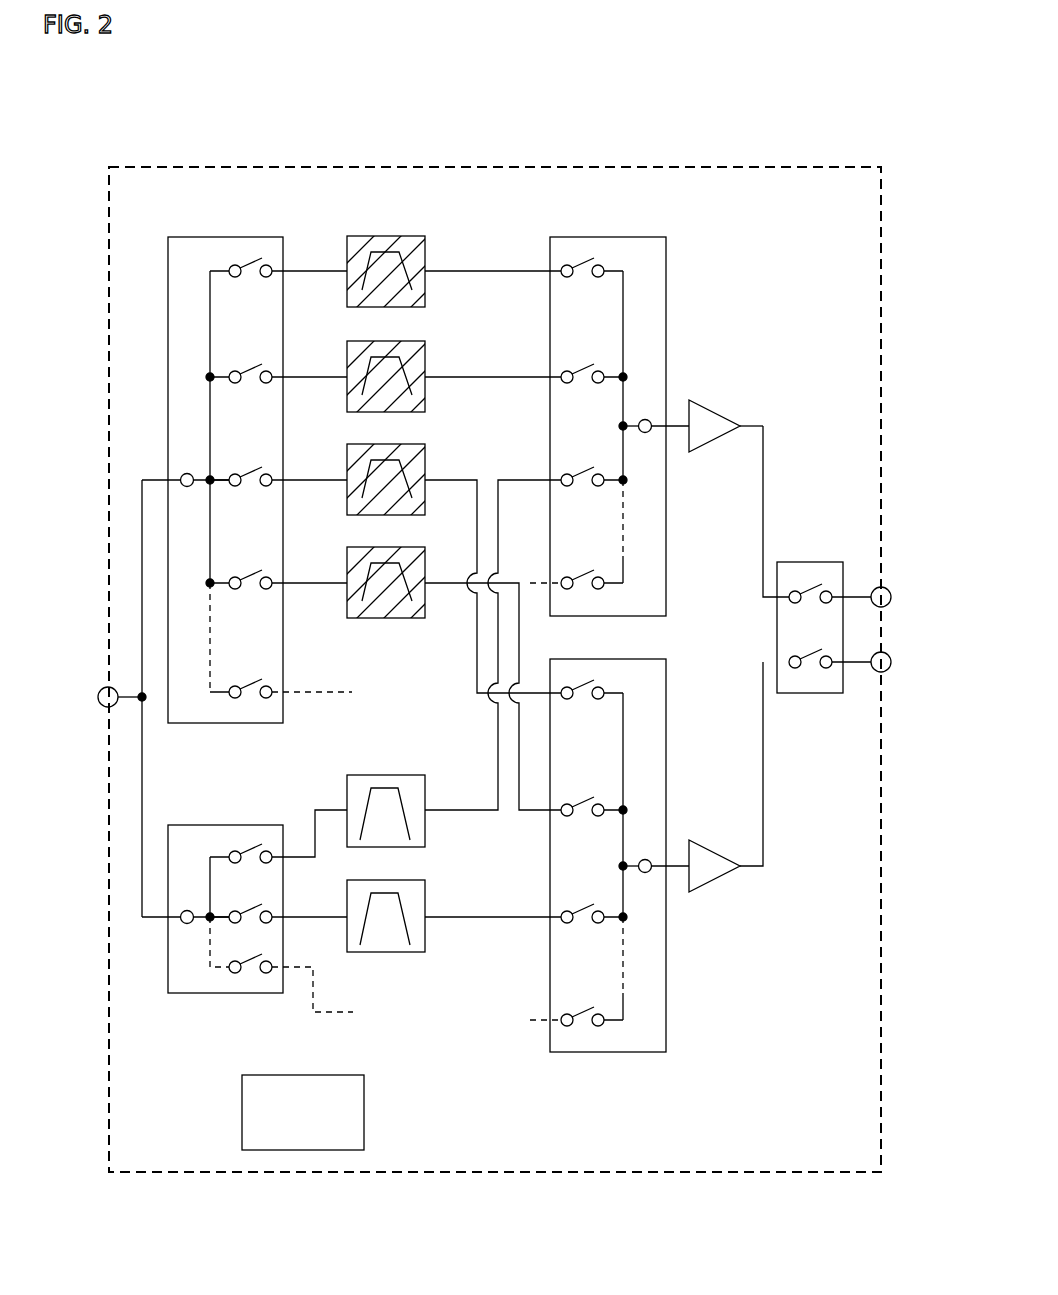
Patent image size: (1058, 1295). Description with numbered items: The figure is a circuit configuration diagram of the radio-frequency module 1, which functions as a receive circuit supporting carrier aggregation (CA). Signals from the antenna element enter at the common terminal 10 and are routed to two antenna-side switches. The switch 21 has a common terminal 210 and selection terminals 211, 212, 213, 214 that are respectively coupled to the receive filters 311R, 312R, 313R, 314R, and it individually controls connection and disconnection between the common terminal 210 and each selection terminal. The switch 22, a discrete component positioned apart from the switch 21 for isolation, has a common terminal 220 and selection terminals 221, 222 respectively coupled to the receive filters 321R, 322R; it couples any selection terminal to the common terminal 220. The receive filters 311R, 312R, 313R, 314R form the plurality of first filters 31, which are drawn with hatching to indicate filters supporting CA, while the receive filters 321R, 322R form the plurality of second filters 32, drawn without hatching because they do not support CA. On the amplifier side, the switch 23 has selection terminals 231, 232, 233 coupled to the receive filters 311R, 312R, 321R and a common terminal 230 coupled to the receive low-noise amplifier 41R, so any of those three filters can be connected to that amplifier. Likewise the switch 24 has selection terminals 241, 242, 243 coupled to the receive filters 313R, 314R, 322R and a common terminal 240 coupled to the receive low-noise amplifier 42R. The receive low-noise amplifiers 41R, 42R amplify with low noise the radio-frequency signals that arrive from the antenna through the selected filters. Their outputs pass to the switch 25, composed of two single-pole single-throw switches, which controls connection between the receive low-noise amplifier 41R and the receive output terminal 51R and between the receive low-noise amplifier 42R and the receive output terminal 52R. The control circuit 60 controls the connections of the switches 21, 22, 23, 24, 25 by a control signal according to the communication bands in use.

The radio-frequency module 1 is at (545, 167).
The common terminal 10 is at (100, 688).
The switch 21 is at (235, 457).
The switch 22 is at (235, 894).
The switch 23 is at (611, 403).
The switch 24 is at (611, 838).
The switch 25 is at (800, 562).
The plurality of first filters 31 is at (398, 436).
The plurality of second filters 32 is at (389, 851).
The receive low-noise amplifier 41R is at (703, 445).
The receive low-noise amplifier 42R is at (705, 884).
The receive output terminal 51R is at (888, 606).
The receive output terminal 52R is at (888, 671).
The control circuit 60 is at (364, 1105).
The common terminal 210 is at (182, 472).
The selection terminal 211 is at (270, 264).
The selection terminal 212 is at (270, 370).
The selection terminal 213 is at (270, 473).
The selection terminal 214 is at (270, 576).
The common terminal 220 is at (182, 924).
The selection terminal 221 is at (268, 863).
The selection terminal 222 is at (268, 922).
The common terminal 230 is at (649, 420).
The selection terminal 231 is at (562, 265).
The selection terminal 232 is at (562, 369).
The selection terminal 233 is at (562, 472).
The common terminal 240 is at (649, 858).
The selection terminal 241 is at (561, 684).
The selection terminal 242 is at (561, 818).
The selection terminal 243 is at (561, 925).
The receive filter 311R is at (375, 308).
The receive filter 312R is at (375, 413).
The receive filter 313R is at (375, 516).
The receive filter 314R is at (375, 619).
The receive filter 321R is at (375, 848).
The receive filter 322R is at (375, 953).